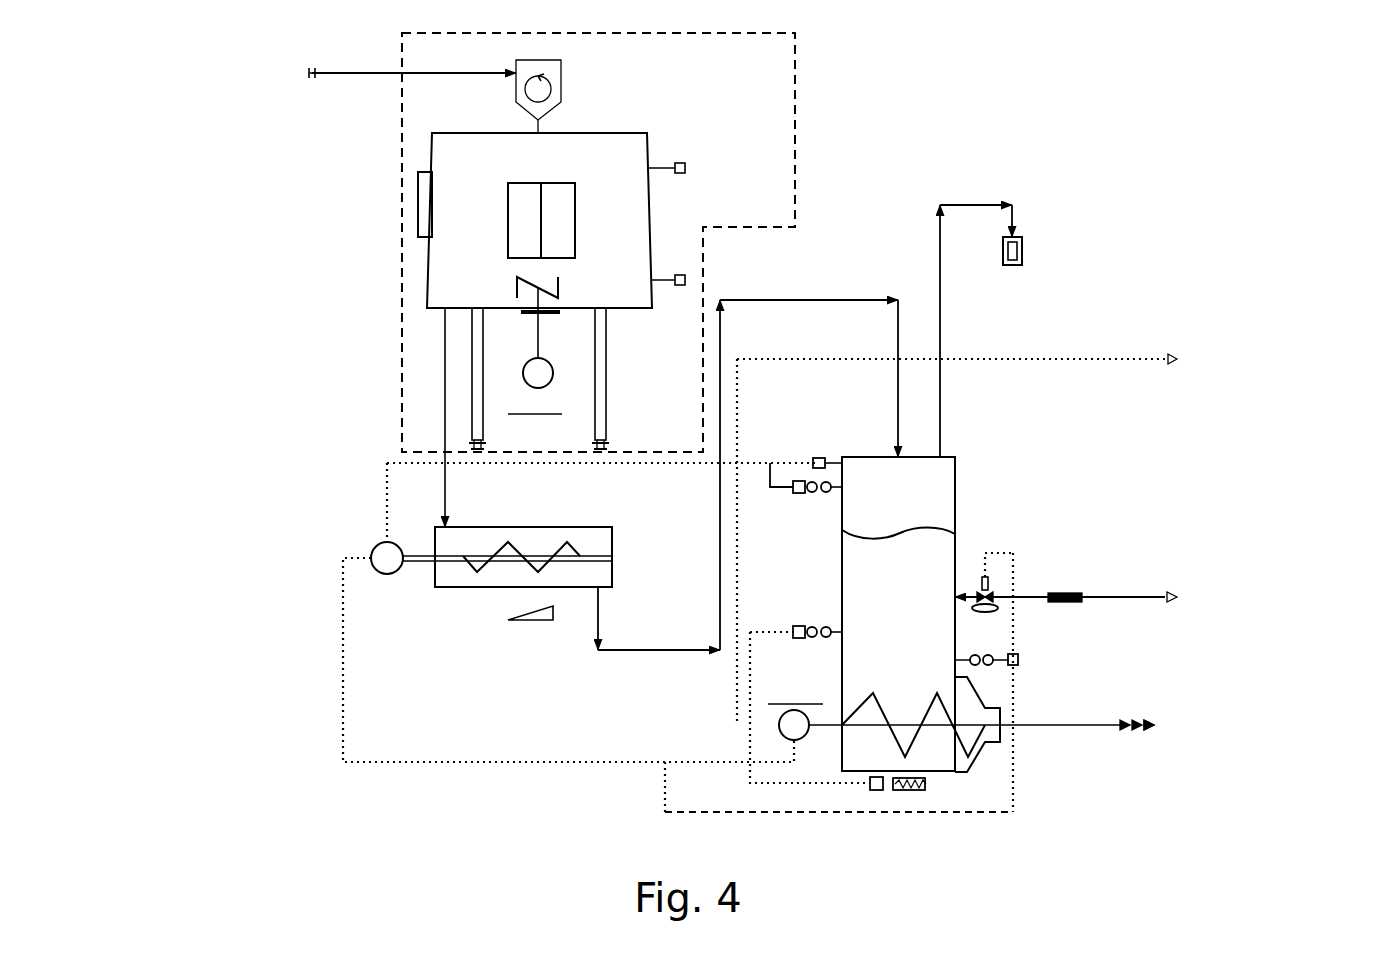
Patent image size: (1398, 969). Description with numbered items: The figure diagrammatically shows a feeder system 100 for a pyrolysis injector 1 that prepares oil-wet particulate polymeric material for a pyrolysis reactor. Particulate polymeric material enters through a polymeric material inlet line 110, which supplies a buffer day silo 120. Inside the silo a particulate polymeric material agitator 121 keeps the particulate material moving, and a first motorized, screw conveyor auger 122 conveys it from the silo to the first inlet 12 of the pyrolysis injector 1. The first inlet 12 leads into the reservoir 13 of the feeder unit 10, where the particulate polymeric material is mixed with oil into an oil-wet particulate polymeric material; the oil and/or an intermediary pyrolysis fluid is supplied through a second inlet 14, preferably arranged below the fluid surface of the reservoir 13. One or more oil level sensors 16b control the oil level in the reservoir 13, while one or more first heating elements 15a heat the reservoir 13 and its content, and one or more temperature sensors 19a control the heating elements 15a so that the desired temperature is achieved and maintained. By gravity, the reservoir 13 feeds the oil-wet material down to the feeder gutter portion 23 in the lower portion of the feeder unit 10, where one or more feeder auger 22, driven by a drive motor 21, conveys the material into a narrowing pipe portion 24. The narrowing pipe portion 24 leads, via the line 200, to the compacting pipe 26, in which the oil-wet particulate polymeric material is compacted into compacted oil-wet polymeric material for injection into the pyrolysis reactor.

The pyrolysis injector 1 is at (1175, 483).
The feeder unit 10 is at (913, 535).
The first inlet 12 is at (905, 454).
The reservoir 13 is at (898, 614).
The second inlet 14 is at (968, 590).
The first heating element 15a is at (930, 783).
The oil level sensor 16b is at (822, 494).
The temperature sensor 19a is at (813, 629).
The drive motor for feeder auger 21 is at (779, 725).
The feeder auger 22 is at (862, 707).
The feeder gutter portion 23 is at (897, 755).
The narrowing pipe portion 24 is at (987, 703).
The compacting pipe 26 is at (1181, 733).
The line to compacting pipe 200 is at (1253, 740).
The feeder system 100 is at (228, 290).
The polymeric material inlet line 110 is at (305, 73).
The buffer day silo 120 is at (462, 198).
The particulate polymeric material agitator 121 is at (513, 297).
The first motorized, screw conveyor auger 122 is at (435, 582).